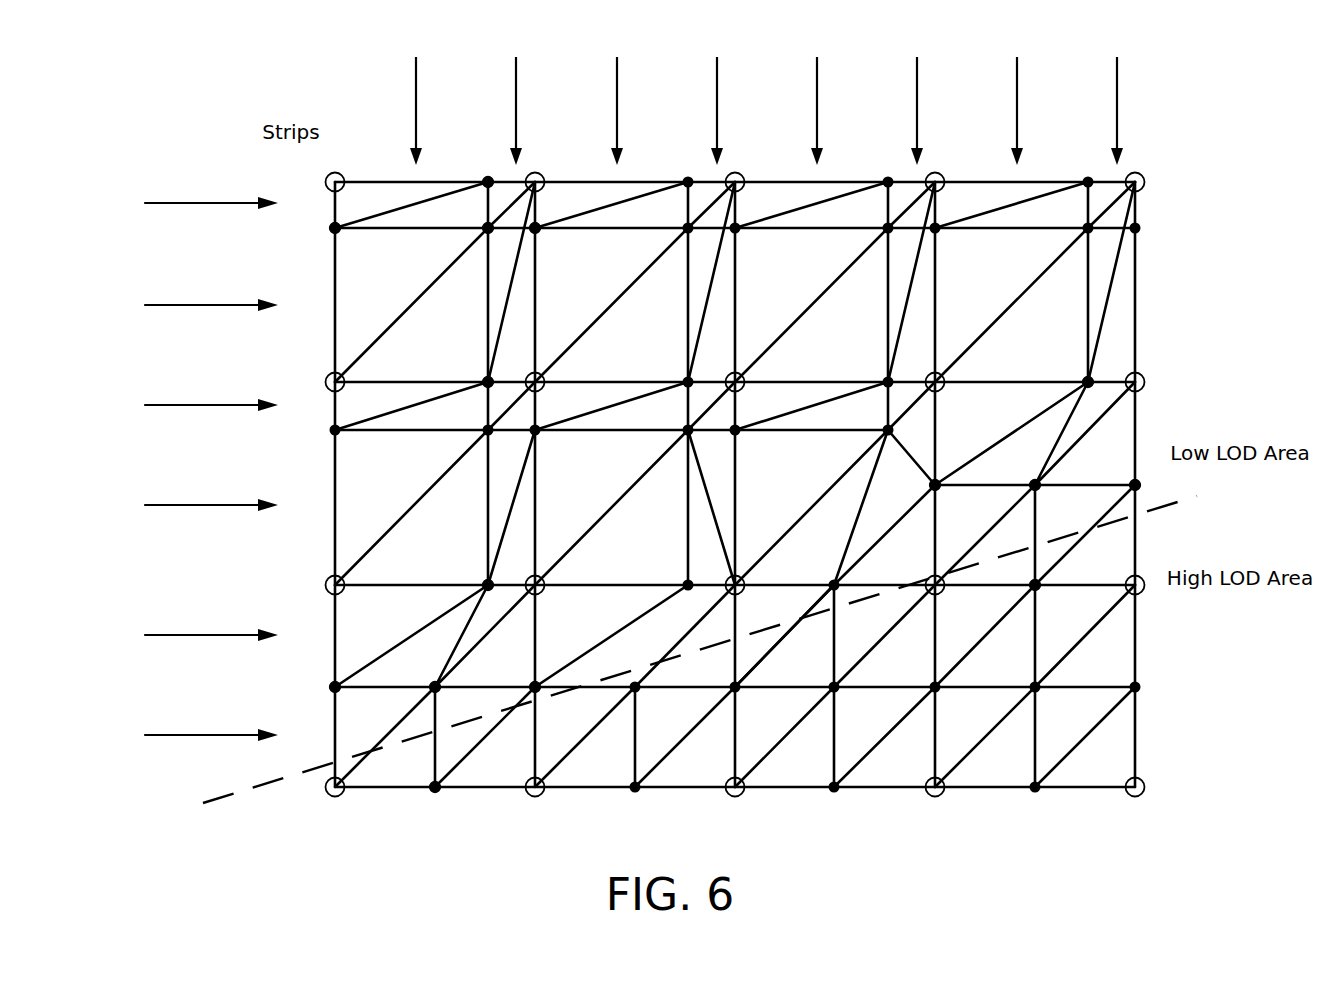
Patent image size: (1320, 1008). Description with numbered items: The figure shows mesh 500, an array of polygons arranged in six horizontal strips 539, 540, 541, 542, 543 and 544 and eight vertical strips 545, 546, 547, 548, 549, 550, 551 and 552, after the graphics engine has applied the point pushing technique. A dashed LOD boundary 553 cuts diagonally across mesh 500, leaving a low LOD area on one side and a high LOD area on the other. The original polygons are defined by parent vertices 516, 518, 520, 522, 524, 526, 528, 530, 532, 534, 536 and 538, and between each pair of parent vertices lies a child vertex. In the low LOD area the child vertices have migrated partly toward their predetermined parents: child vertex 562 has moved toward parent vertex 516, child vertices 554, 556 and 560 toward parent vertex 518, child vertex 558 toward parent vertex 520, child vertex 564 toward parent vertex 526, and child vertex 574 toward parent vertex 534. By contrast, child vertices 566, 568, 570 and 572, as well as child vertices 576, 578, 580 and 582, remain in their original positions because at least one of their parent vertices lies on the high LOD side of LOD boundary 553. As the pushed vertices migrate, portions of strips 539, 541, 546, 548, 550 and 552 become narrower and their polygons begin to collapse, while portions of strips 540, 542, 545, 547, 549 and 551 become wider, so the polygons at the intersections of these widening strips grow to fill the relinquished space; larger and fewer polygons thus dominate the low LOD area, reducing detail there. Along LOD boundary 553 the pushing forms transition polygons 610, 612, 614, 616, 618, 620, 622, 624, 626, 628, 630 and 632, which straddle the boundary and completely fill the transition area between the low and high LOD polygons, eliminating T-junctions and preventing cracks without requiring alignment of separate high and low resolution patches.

The mesh 500 is at (1148, 105).
The parent vertex 516 is at (337, 172).
The parent vertex 518 is at (529, 176).
The parent vertex 520 is at (542, 380).
The parent vertex 522 is at (331, 379).
The parent vertex 524 is at (940, 387).
The parent vertex 526 is at (1144, 385).
The parent vertex 528 is at (1144, 590).
The parent vertex 530 is at (935, 590).
The parent vertex 532 is at (330, 581).
The parent vertex 534 is at (535, 594).
The parent vertex 536 is at (532, 794).
The parent vertex 538 is at (327, 786).
The horizontal strip of polygons 539 is at (181, 204).
The horizontal strip of polygons 540 is at (181, 306).
The horizontal strip of polygons 541 is at (181, 406).
The horizontal strip of polygons 542 is at (181, 506).
The horizontal strip of polygons 543 is at (181, 636).
The horizontal strip of polygons 544 is at (181, 736).
The vertical strip of polygons 545 is at (416, 99).
The vertical strip of polygons 546 is at (516, 99).
The vertical strip of polygons 547 is at (617, 99).
The vertical strip of polygons 548 is at (717, 99).
The vertical strip of polygons 549 is at (817, 99).
The vertical strip of polygons 550 is at (917, 99).
The vertical strip of polygons 551 is at (1017, 99).
The vertical strip of polygons 552 is at (1117, 99).
The LOD boundary 553 is at (1155, 513).
The child vertex 554 is at (489, 178).
The child vertex 556 is at (538, 230).
The child vertex 558 is at (487, 378).
The child vertex 560 is at (486, 230).
The child vertex 562 is at (333, 227).
The child vertex 564 is at (1087, 380).
The child vertex 566 is at (1139, 483).
The child vertex 568 is at (1038, 589).
The child vertex 570 is at (1043, 482).
The child vertex 572 is at (938, 489).
The child vertex 574 is at (485, 583).
The child vertex 576 is at (537, 685).
The child vertex 578 is at (434, 791).
The child vertex 580 is at (435, 685).
The child vertex 582 is at (331, 685).
The transition polygon 610 is at (349, 726).
The transition polygon 612 is at (382, 781).
The transition polygon 614 is at (447, 712).
The transition polygon 616 is at (545, 732).
The transition polygon 618 is at (600, 668).
The transition polygon 620 is at (685, 684).
The transition polygon 622 is at (745, 614).
The transition polygon 624 is at (782, 672).
The transition polygon 626 is at (844, 634).
The transition polygon 628 is at (996, 544).
The transition polygon 630 is at (1048, 520).
The transition polygon 632 is at (1079, 573).